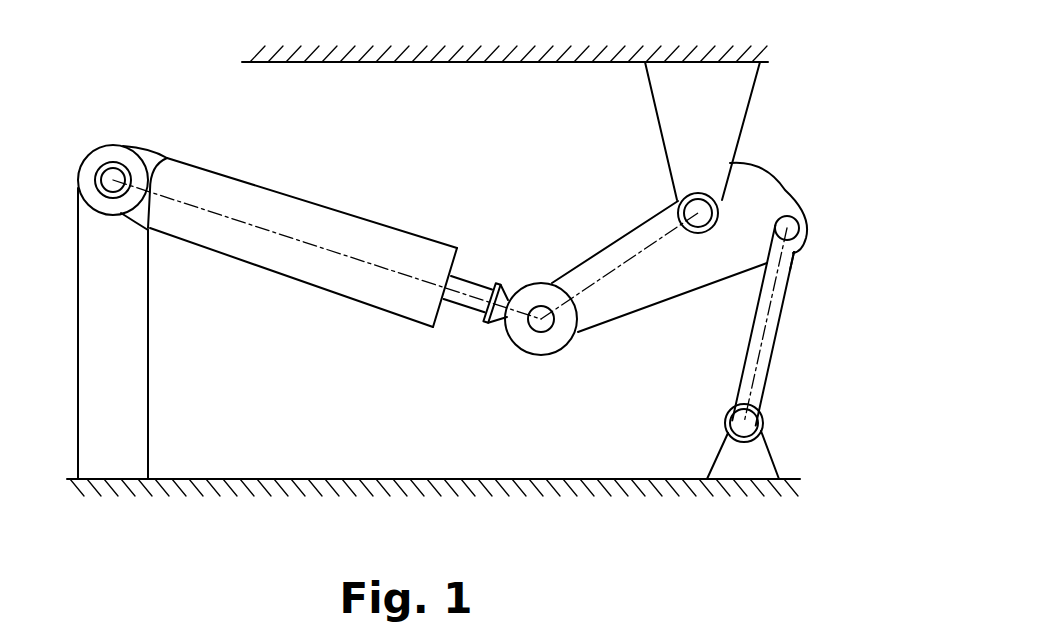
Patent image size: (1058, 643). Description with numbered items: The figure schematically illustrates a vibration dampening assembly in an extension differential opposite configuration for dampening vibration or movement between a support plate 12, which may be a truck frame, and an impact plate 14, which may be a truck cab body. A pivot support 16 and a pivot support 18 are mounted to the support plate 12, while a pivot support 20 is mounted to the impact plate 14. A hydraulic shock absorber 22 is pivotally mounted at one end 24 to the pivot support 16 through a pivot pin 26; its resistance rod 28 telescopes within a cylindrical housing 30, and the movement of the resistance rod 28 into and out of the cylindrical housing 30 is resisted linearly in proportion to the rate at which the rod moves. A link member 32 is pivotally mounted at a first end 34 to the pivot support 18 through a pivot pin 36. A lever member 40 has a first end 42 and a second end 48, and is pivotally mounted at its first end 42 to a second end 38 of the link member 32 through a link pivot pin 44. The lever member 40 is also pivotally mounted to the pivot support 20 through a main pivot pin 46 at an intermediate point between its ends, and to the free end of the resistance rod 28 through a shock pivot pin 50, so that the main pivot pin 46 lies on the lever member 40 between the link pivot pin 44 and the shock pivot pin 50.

The support plate 12 is at (440, 478).
The impact plate 14 is at (430, 63).
The pivot support 16 is at (145, 365).
The pivot support 18 is at (717, 440).
The pivot support 20 is at (730, 112).
The hydraulic shock absorber 22 is at (325, 204).
The end of shock absorber 24 is at (155, 163).
The pivot pin 26 is at (112, 175).
The resistance rod 28 is at (474, 280).
The cylindrical housing 30 is at (385, 293).
The link member 32 is at (772, 331).
The first end of link member 34 is at (757, 402).
The pivot pin 36 is at (744, 423).
The second end of link member 38 is at (793, 250).
The lever member 40 is at (673, 287).
The first end of lever member 42 is at (790, 192).
The link pivot pin 44 is at (789, 229).
The main pivot pin 46 is at (687, 227).
The second end of lever member 48 is at (543, 283).
The shock pivot pin 50 is at (543, 318).